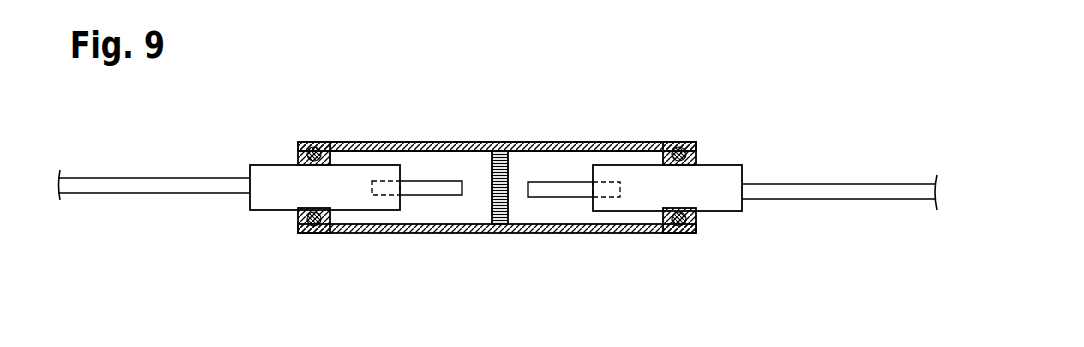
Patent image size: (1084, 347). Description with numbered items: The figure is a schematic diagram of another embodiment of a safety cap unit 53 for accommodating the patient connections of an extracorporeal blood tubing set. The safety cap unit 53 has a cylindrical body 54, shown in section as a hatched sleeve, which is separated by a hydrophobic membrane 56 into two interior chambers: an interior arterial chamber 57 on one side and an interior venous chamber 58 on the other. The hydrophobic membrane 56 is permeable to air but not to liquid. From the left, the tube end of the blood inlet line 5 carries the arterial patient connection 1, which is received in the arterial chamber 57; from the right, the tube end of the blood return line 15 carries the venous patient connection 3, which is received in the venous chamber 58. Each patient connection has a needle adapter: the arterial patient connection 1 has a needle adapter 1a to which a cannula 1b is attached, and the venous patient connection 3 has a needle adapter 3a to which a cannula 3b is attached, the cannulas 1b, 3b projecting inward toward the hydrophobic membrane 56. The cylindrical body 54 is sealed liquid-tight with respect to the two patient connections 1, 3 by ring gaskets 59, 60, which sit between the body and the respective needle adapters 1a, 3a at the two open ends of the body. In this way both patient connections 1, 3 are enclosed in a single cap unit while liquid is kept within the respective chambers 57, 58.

The arterial patient connection 1 is at (288, 222).
The needle adapter 1a is at (267, 163).
The cannula 1b is at (437, 188).
The venous patient connection 3 is at (710, 151).
The needle adapter 3a is at (728, 215).
The cannula 3b is at (565, 190).
The blood inlet line 5 is at (148, 182).
The blood return line 15 is at (813, 185).
The safety cap unit 53 is at (524, 120).
The cylindrical body 54 is at (478, 236).
The hydrophobic membrane 56 is at (496, 147).
The interior arterial chamber 57 is at (395, 147).
The interior venous chamber 58 is at (624, 147).
The ring gasket 59 is at (312, 235).
The ring gasket 60 is at (668, 236).